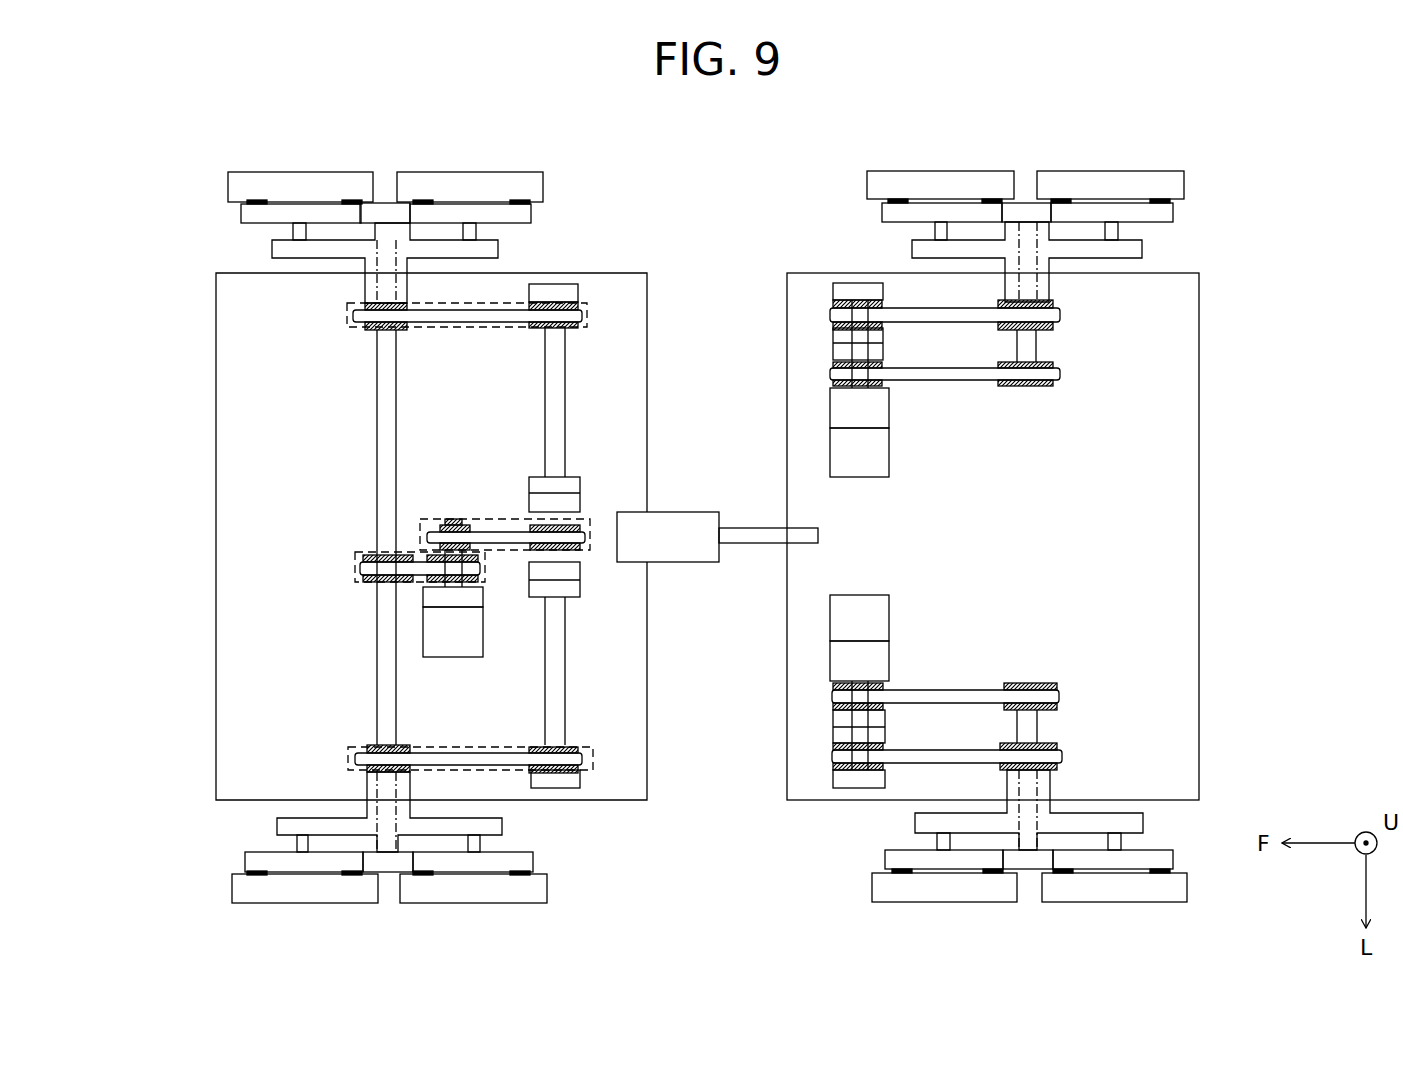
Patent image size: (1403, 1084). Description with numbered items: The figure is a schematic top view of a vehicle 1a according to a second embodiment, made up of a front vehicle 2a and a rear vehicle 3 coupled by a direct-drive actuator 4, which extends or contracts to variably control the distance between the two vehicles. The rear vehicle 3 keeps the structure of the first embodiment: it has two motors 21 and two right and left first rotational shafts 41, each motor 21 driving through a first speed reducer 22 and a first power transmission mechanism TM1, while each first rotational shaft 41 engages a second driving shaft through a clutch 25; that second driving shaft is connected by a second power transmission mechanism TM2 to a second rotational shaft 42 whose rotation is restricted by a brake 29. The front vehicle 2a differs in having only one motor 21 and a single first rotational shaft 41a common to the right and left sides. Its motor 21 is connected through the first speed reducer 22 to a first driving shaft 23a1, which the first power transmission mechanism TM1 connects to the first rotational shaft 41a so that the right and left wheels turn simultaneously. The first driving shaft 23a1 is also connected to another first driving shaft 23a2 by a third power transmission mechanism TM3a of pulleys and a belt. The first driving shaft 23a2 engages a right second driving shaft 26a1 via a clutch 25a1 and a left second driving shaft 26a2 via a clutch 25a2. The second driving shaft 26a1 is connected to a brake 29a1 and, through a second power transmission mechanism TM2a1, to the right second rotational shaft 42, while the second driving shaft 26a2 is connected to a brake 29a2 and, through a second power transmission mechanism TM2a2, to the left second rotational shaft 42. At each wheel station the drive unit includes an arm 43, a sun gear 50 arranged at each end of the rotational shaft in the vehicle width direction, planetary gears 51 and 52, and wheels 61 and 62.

The vehicle 1a is at (1338, 124).
The front vehicle 2a is at (585, 172).
The rear vehicle 3 is at (846, 172).
The direct-drive actuator 4 is at (696, 552).
The motor 21 is at (423, 635).
The first speed reducer 22 is at (423, 598).
The first driving shaft 23a1 is at (445, 522).
The first driving shaft 23a2 is at (585, 527).
The clutch 25 is at (833, 336).
The clutch 25a1 is at (580, 500).
The clutch 25a2 is at (580, 572).
The second driving shaft 26a1 is at (565, 390).
The second driving shaft 26a2 is at (565, 683).
The brake 29 is at (833, 290).
The brake 29a1 is at (578, 292).
The brake 29a2 is at (580, 790).
The first rotational shaft 41 is at (1036, 350).
The first rotational shaft 41a is at (377, 428).
The second rotational shaft 42 is at (365, 265).
The arm 43 is at (495, 250).
The sun gear 50 is at (385, 204).
The planetary gear 51 is at (529, 213).
The planetary gear 52 is at (243, 213).
The wheel 61 is at (500, 186).
The wheel 62 is at (268, 186).
The first power transmission mechanism TM1 is at (355, 567).
The second power transmission mechanism TM2 is at (830, 315).
The second power transmission mechanism TM2a1 is at (347, 318).
The second power transmission mechanism TM2a2 is at (348, 757).
The third power transmission mechanism TM3a is at (420, 535).